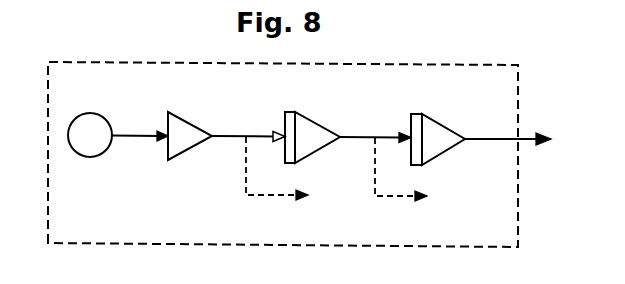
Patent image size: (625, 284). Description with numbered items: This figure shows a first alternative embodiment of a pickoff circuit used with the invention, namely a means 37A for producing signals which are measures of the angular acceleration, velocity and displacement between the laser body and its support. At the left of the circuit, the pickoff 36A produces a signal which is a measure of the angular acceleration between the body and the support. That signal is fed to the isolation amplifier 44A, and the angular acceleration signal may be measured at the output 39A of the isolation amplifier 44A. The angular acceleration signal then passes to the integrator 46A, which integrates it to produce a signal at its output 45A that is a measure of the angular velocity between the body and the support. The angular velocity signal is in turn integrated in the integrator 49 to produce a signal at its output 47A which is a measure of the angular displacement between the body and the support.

The pickoff 36A is at (98, 115).
The means for producing signals 37A is at (445, 251).
The output of the isolation amplifier 39A is at (272, 197).
The isolation amplifier 44A is at (191, 119).
The output of the integrator 45A is at (392, 198).
The integrator 46A is at (318, 121).
The output of the integrator 47A is at (532, 146).
The integrator 49 is at (450, 121).